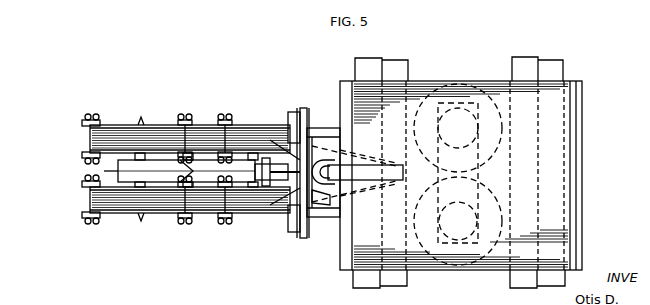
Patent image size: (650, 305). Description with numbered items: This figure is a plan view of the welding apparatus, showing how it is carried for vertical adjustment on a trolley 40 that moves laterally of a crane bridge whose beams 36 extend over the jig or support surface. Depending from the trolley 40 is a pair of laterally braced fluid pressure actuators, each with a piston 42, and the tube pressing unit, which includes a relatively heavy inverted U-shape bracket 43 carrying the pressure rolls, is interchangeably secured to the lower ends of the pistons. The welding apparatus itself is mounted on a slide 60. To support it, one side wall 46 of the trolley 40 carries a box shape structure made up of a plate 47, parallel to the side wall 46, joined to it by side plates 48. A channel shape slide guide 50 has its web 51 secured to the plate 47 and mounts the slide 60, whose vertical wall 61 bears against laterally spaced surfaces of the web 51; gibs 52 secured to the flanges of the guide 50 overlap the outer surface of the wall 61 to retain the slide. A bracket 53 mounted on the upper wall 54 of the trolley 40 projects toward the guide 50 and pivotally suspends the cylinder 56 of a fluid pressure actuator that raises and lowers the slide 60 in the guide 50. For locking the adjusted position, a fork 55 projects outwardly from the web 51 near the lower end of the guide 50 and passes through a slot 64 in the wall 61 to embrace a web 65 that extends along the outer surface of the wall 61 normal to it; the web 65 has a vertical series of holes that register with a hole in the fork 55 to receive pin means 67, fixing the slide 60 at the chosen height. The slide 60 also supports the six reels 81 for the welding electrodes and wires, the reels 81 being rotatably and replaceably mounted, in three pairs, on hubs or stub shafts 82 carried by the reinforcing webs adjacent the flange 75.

The beams 36 is at (362, 68).
The trolley 40 is at (497, 97).
The piston 42 is at (447, 262).
The inverted U-shape bracket 43 is at (498, 164).
The side wall 46 is at (341, 84).
The plate 47 is at (308, 110).
The side plates 48 is at (326, 128).
The slide guide 50 is at (305, 245).
The web 51 is at (304, 238).
The gibs 52 is at (292, 116).
The bracket 53 is at (390, 168).
The upper wall 54 is at (550, 150).
The fork 55 is at (322, 199).
The cylinder 56 is at (338, 183).
The slide 60 is at (100, 174).
The vertical wall 61 is at (278, 200).
The slot 64 is at (283, 140).
The web 65 is at (262, 172).
The pin means 67 is at (323, 165).
The flange 75 is at (152, 165).
The reels 81 is at (209, 140).
The hubs or stub shafts 82 is at (127, 150).